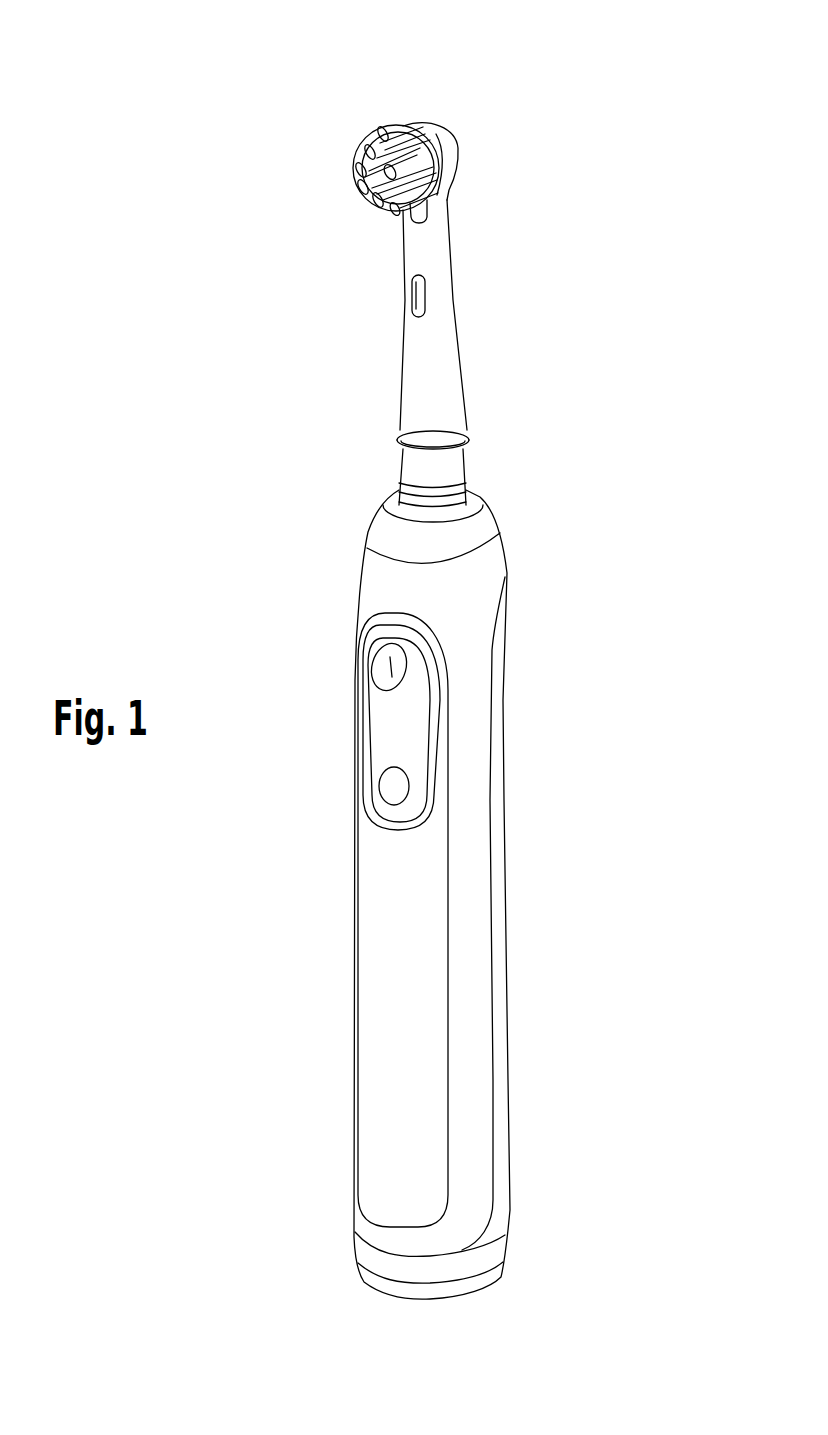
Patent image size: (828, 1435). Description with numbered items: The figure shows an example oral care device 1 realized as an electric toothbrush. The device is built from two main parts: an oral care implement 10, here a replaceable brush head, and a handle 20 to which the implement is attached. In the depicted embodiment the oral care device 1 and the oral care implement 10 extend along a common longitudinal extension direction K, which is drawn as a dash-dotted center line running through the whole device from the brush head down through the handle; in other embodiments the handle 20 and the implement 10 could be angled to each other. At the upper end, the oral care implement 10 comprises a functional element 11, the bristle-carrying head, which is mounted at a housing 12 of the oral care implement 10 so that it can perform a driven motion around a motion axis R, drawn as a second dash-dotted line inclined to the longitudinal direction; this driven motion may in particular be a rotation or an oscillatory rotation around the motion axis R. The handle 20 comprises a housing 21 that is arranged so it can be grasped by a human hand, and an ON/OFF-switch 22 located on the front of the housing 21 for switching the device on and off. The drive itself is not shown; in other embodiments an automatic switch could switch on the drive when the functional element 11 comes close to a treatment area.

The oral care device 1 is at (212, 443).
The oral care implement 10 is at (565, 308).
The functional element 11 is at (387, 113).
The housing of the oral care implement 12 is at (445, 390).
The handle 20 is at (565, 934).
The housing 21 is at (502, 1083).
The ON/OFF-switch 22 is at (400, 673).
The longitudinal extension direction K is at (419, 122).
The motion axis R is at (290, 228).